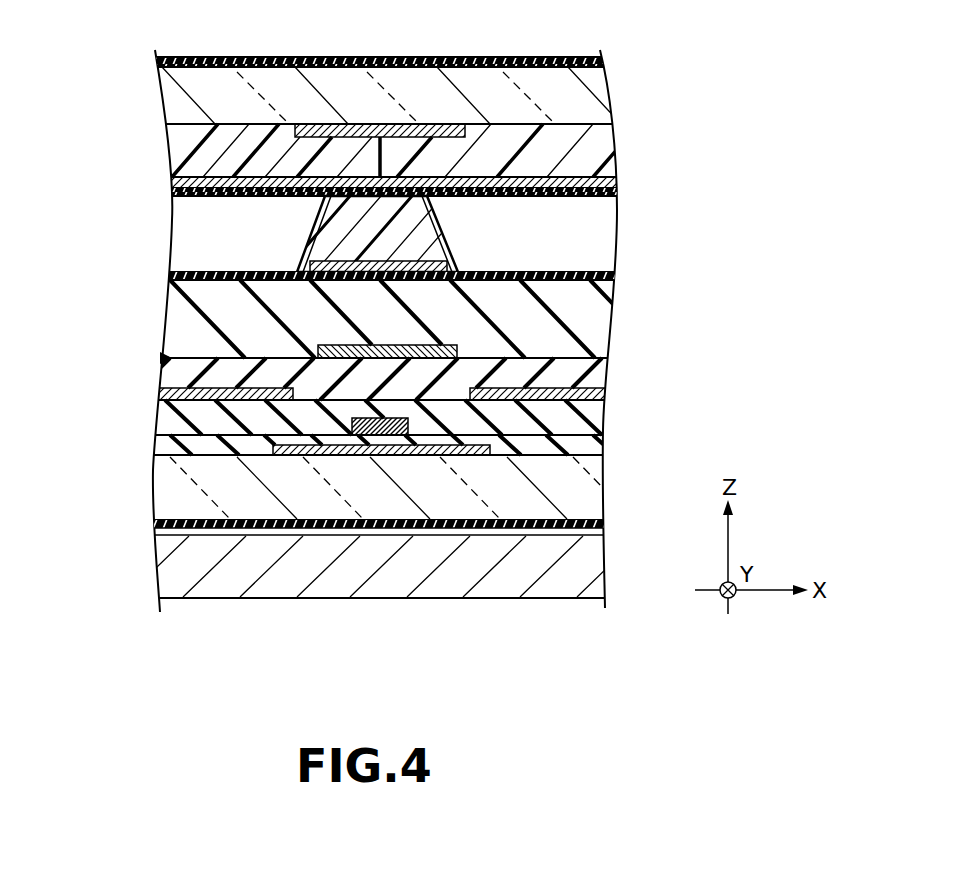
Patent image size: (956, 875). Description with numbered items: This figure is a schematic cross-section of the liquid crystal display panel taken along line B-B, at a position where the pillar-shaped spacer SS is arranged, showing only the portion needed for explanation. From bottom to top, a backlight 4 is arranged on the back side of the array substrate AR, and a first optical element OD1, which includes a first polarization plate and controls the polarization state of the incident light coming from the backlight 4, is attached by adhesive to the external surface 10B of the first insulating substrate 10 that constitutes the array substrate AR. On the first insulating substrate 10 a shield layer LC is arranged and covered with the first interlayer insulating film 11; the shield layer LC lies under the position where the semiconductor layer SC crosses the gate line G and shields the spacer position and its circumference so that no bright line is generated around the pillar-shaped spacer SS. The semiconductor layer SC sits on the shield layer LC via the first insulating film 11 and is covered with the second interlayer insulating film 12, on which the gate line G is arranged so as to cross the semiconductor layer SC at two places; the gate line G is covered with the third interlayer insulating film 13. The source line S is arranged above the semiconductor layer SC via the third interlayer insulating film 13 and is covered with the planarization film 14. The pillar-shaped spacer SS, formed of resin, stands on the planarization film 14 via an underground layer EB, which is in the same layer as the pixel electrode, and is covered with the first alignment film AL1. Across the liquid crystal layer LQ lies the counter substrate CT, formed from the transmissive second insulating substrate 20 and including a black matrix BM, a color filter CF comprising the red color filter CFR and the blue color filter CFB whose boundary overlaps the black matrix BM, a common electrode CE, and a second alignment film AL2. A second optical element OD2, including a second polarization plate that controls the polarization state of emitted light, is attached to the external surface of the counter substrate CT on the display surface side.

The line B- B is at (380, 317).
The counter substrate CT is at (388, 116).
The array substrate AR is at (377, 454).
The second optical element OD2 is at (435, 58).
The second insulating substrate 20 is at (602, 92).
The color filter CF is at (430, 97).
The blue color filter CFB is at (243, 124).
The red color filter CFR is at (550, 123).
The black matrix BM is at (350, 124).
The common electrode CE is at (613, 183).
The second alignment film AL2 is at (182, 196).
The liquid crystal layer LQ is at (410, 234).
The pillar-shaped spacer SS is at (322, 224).
The underground layer EB is at (453, 252).
The first alignment film AL1 is at (170, 277).
The planarization film 14 is at (603, 310).
The source line S is at (320, 347).
The third interlayer insulating film 13 is at (600, 373).
The gate line G is at (158, 391).
The second interlayer insulating film 12 is at (597, 415).
The semiconductor layer SC is at (370, 457).
The first interlayer insulating film 11 is at (597, 443).
The shield layer LC is at (303, 457).
The first insulating substrate 10 is at (400, 549).
The external surface 10B is at (207, 525).
The first optical element OD1 is at (465, 528).
The backlight 4 is at (568, 583).